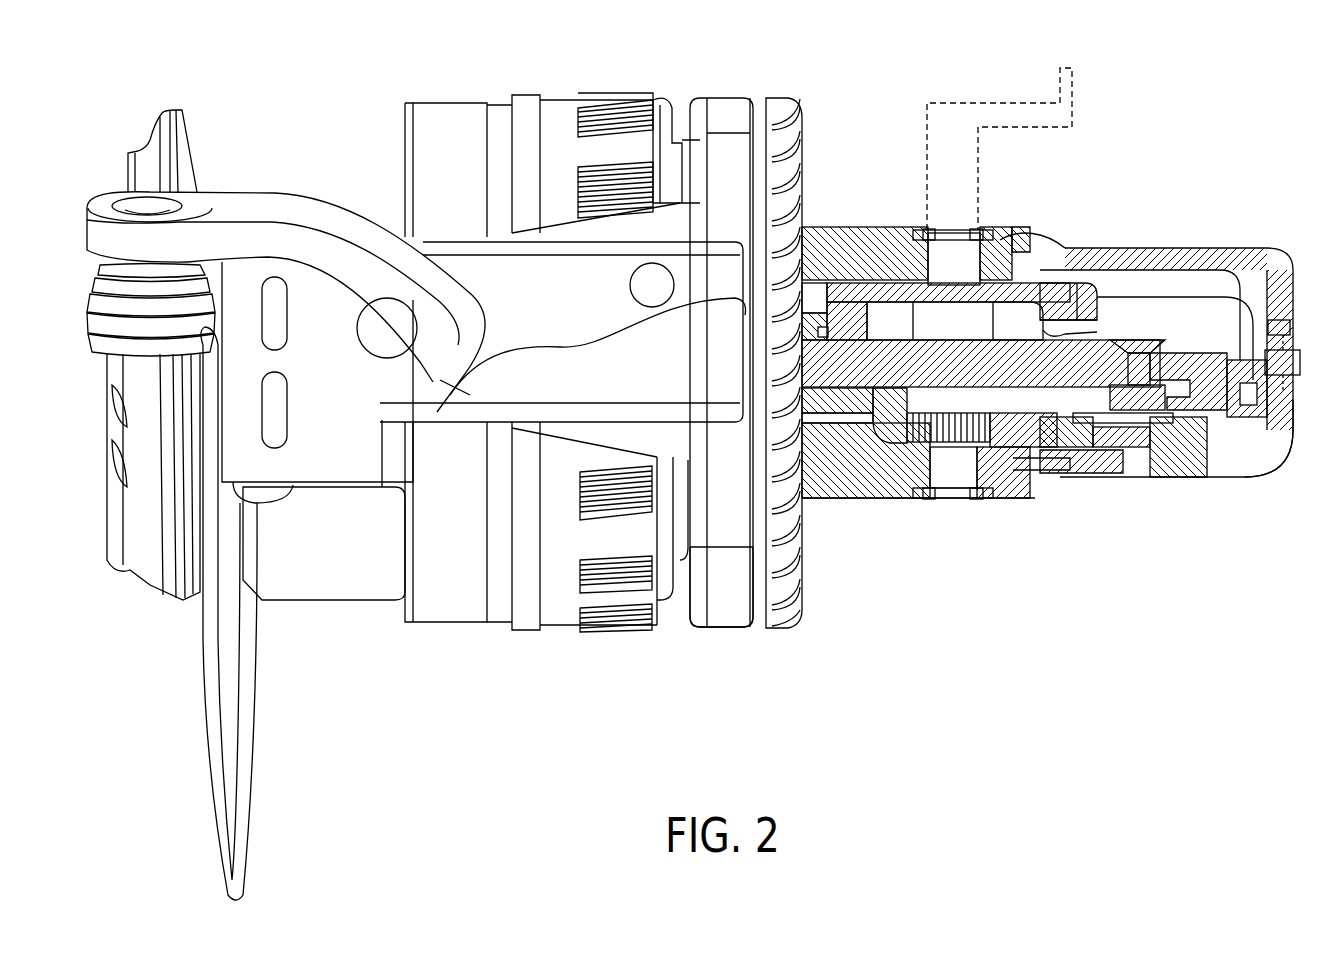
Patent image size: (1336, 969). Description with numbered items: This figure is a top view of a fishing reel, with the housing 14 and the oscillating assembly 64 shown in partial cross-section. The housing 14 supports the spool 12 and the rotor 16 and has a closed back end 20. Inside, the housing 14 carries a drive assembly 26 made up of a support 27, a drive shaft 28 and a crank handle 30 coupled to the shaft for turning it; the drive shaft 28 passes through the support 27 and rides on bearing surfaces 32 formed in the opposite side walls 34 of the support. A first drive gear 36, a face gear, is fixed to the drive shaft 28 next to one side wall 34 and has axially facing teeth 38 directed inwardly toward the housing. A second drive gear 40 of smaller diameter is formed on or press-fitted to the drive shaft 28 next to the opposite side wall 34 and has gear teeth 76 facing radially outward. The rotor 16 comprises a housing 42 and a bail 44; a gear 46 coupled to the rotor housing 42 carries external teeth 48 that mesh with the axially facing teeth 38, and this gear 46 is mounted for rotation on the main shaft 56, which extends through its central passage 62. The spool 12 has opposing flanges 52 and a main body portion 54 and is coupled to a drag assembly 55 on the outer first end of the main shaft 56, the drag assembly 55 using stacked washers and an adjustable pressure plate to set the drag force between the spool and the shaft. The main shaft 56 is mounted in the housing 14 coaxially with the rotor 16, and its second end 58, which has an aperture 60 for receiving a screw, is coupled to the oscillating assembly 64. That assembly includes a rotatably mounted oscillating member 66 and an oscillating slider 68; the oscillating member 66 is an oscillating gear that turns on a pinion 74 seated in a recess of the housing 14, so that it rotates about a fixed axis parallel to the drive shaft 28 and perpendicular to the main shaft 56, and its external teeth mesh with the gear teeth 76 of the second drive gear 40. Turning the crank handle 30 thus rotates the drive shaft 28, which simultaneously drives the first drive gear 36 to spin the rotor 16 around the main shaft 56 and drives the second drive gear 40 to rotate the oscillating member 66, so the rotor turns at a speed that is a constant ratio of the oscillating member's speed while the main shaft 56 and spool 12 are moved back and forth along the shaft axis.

The spool 12 is at (187, 116).
The housing 14 is at (1263, 247).
The rotor 16 is at (319, 200).
The closed back end 20 is at (1295, 425).
The drive assembly 26 is at (895, 276).
The support 27 is at (811, 226).
The drive shaft 28 is at (975, 255).
The crank handle 30 is at (997, 100).
The bearing surfaces 32 is at (910, 235).
The side walls 34 is at (815, 227).
The first drive gear 36 is at (1080, 284).
The axially facing teeth 38 is at (1062, 333).
The second drive gear 40 is at (955, 448).
The housing 42 is at (720, 630).
The bail 44 is at (255, 797).
The gear 46 is at (828, 400).
The external teeth 48 is at (830, 390).
The flanges 52 is at (404, 587).
The main body portion 54 is at (322, 470).
The drag assembly 55 is at (555, 90).
The main shaft 56 is at (1052, 380).
The second end 58 is at (1185, 385).
The aperture 60 is at (1160, 358).
The central passage 62 is at (808, 380).
The oscillating assembly 64 is at (1179, 451).
The oscillating member 66 is at (1255, 437).
The oscillating slider 68 is at (1256, 355).
The pinion 74 is at (1130, 440).
The gear teeth 76 is at (945, 428).